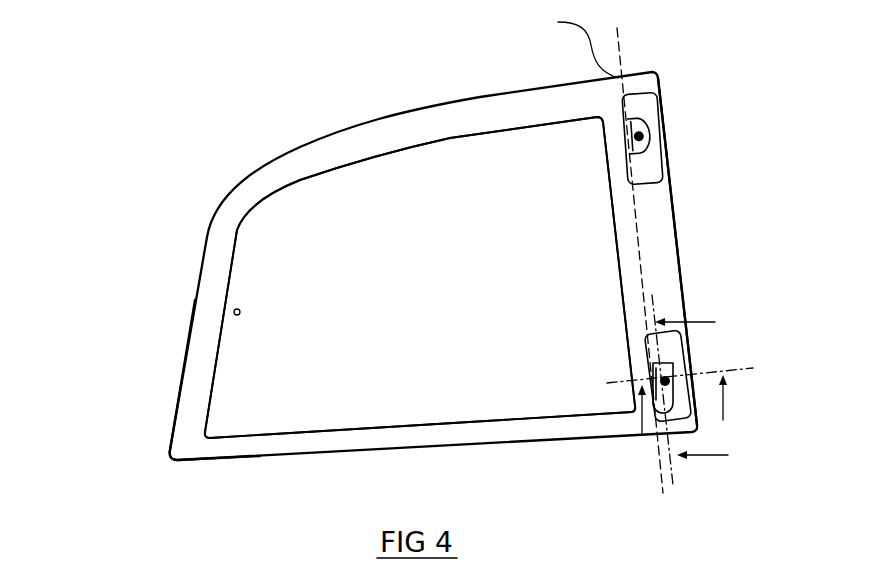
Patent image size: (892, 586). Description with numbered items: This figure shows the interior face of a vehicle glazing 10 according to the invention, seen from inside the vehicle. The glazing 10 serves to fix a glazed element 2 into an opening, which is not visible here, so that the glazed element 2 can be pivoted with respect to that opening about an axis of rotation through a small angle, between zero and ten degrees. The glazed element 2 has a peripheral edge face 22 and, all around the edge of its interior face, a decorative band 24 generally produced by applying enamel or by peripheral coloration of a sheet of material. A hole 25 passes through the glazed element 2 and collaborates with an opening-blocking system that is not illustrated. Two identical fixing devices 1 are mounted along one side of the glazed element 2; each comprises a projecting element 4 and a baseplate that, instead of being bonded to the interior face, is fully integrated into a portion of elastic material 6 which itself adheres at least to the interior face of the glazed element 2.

The glazing 10 is at (110, 155).
The fixing device 1 is at (699, 122).
The glazed element 2 is at (376, 367).
The peripheral edge face 22 is at (670, 218).
The decorative band 24 is at (175, 436).
The hole 25 is at (232, 310).
The portion of elastic material 6 is at (677, 357).
The projecting element 4 is at (677, 410).